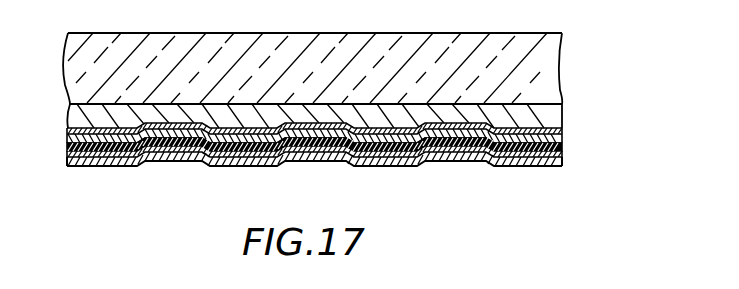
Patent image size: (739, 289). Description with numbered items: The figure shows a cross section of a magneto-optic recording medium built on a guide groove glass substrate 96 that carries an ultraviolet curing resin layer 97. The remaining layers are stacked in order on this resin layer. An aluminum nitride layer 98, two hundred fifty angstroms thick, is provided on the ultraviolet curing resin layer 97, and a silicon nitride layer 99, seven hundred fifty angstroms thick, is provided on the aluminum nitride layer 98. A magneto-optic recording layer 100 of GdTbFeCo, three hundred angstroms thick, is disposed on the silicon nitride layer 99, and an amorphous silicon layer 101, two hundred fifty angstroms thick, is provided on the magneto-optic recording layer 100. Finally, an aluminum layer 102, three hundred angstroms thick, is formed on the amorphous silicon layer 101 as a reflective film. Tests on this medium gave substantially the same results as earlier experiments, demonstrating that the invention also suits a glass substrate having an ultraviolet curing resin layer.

The glass substrate 96 is at (547, 57).
The ultraviolet curing resin layer 97 is at (555, 117).
The aluminum nitride layer 98 is at (560, 133).
The silicon nitride layer 99 is at (563, 146).
The magneto-optic recording layer 100 is at (564, 154).
The amorphous silicon layer 101 is at (565, 163).
The aluminum layer 102 is at (567, 168).